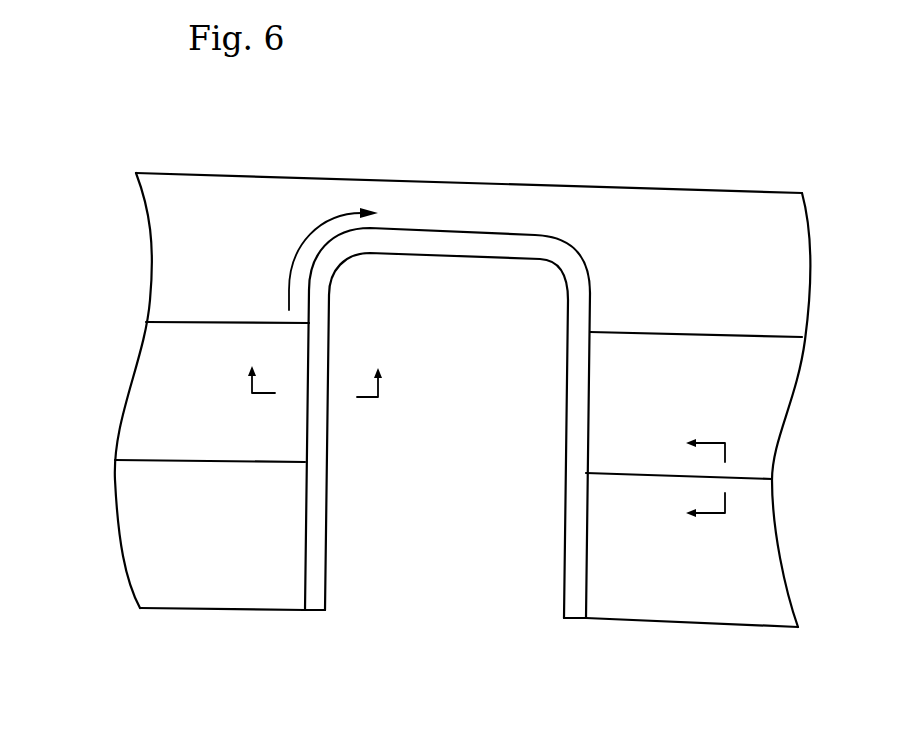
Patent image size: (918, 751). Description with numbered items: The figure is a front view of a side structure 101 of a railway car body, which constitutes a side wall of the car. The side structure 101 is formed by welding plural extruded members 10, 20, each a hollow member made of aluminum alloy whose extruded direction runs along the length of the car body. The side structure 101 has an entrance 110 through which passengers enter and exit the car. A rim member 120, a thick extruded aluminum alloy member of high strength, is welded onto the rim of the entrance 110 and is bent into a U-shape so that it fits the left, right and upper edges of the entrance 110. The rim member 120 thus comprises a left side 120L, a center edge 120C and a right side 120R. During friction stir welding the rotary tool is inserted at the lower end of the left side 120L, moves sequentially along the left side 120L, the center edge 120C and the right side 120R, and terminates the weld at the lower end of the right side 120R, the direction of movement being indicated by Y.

The side structure 101 is at (585, 143).
The extruded member 10 is at (708, 238).
The extruded member 20 is at (165, 402).
The entrance 110 is at (389, 575).
The rim member 120 is at (540, 562).
The left side of the rim member 120L is at (313, 507).
The center edge of the rim member 120C is at (468, 233).
The right side of the rim member 120R is at (565, 440).